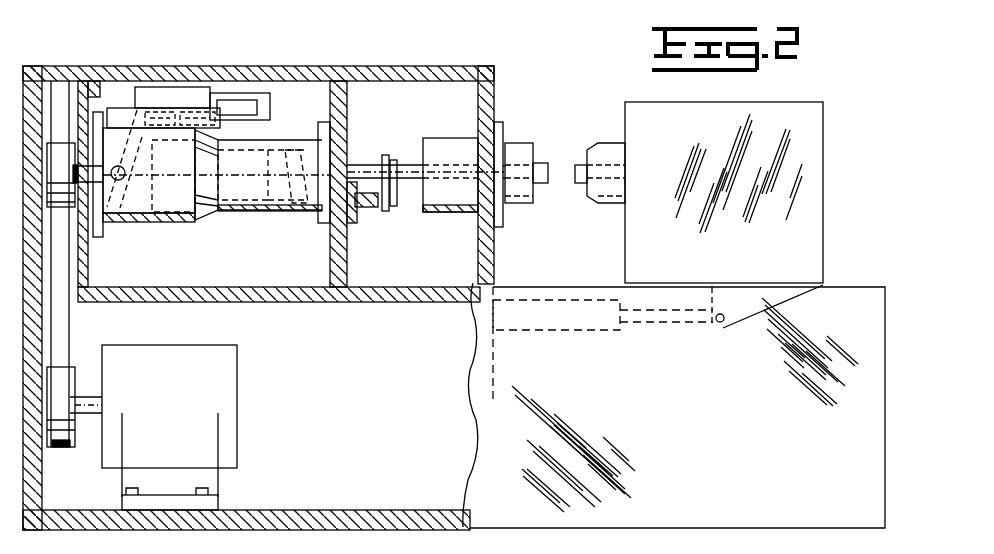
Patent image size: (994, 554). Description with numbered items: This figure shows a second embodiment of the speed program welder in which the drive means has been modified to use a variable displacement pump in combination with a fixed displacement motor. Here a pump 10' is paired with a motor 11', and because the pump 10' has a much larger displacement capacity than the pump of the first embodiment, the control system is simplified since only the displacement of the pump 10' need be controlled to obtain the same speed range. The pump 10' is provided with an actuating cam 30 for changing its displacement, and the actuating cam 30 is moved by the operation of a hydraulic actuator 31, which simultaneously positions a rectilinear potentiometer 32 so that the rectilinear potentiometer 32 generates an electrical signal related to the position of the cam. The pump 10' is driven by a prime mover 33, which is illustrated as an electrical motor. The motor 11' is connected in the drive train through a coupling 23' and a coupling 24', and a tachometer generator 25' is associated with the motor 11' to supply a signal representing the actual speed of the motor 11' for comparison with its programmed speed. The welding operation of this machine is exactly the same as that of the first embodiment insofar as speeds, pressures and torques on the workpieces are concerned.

The pump 10' is at (206, 193).
The motor 11' is at (274, 187).
The coupling 23' is at (526, 148).
The coupling 24' is at (600, 141).
The tachometer generator 25' is at (408, 205).
The actuating cam 30 is at (110, 225).
The hydraulic actuator 31 is at (207, 88).
The rectilinear potentiometer 32 is at (155, 88).
The prime mover 33 is at (232, 362).